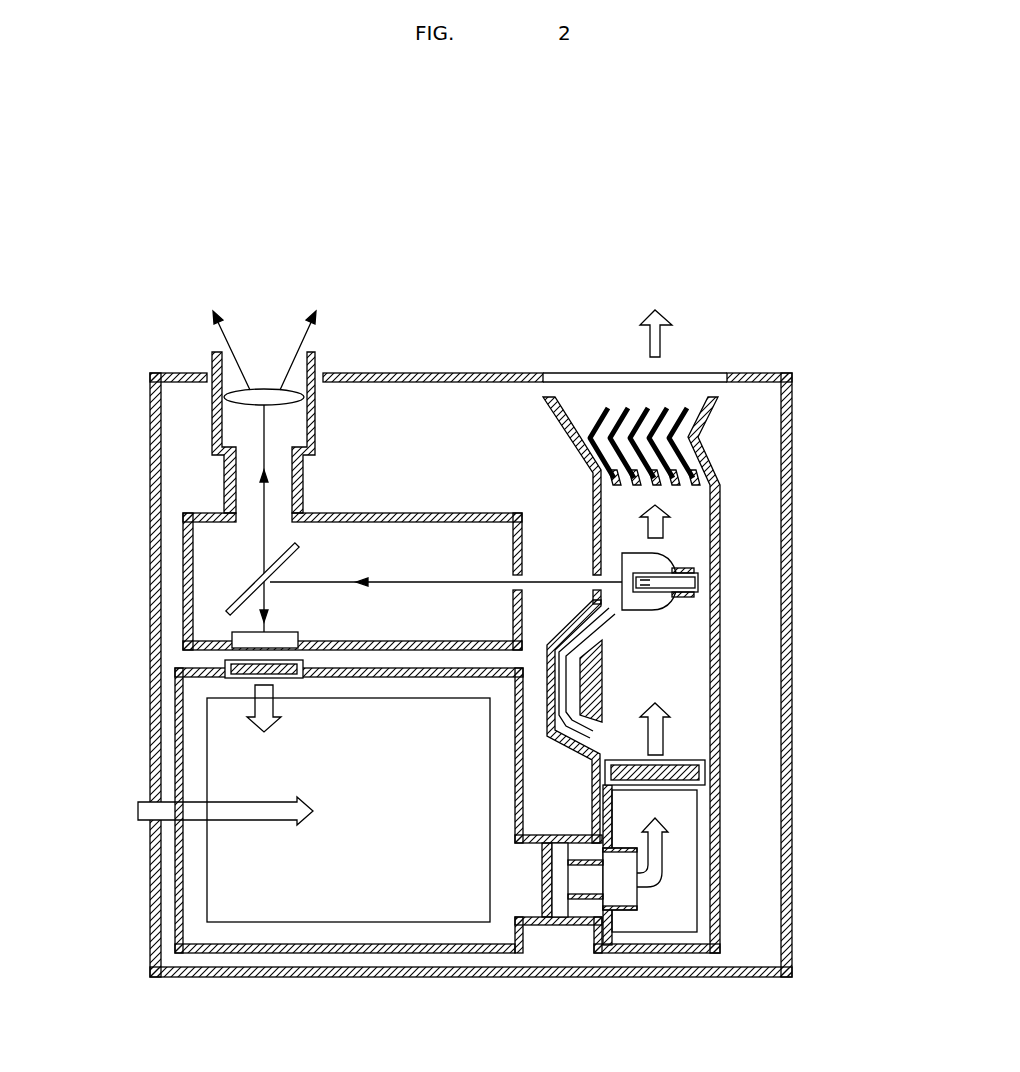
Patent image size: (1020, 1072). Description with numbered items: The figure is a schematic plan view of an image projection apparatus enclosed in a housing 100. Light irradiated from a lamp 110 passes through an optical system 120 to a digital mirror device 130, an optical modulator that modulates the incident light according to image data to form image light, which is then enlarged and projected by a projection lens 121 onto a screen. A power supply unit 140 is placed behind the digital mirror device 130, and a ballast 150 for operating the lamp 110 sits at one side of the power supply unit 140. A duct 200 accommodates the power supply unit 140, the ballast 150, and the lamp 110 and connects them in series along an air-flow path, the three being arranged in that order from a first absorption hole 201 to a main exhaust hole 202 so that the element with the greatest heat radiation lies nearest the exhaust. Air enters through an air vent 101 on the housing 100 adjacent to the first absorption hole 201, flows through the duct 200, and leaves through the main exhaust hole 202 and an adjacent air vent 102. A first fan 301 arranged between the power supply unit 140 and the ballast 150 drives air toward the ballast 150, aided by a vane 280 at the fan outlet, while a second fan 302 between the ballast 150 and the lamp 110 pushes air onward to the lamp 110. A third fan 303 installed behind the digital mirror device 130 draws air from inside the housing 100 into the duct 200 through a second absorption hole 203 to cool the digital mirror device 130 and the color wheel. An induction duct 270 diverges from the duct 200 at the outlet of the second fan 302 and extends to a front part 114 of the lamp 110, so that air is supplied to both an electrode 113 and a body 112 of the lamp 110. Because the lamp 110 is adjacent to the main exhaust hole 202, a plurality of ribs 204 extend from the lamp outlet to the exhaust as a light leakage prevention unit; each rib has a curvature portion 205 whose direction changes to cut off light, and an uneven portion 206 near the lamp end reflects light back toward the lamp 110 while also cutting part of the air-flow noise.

The housing 100 is at (163, 977).
The air vent 101 is at (152, 768).
The air vent 102 is at (578, 378).
The lamp 110 is at (678, 557).
The body of the lamp 112 is at (662, 597).
The electrode of the lamp 113 is at (634, 600).
The front part of the lamp 114 is at (622, 567).
The optical system 120 is at (352, 506).
The projection lens 121 is at (300, 398).
The digital mirror device (DMD) 130 is at (235, 640).
The power supply unit (PSU) 140 is at (320, 922).
The ballast 150 is at (678, 922).
The duct 200 is at (738, 843).
The first absorption hole 201 is at (175, 867).
The main exhaust hole 202 is at (568, 405).
The second absorption hole 203 is at (300, 678).
The ribs 204 is at (683, 415).
The curvature portion 205 is at (693, 437).
The uneven portion 206 is at (720, 480).
The induction duct 270 is at (571, 640).
The vane 280 is at (613, 912).
The first fan 301 is at (527, 897).
The second fan 302 is at (710, 753).
The third fan 303 is at (293, 680).